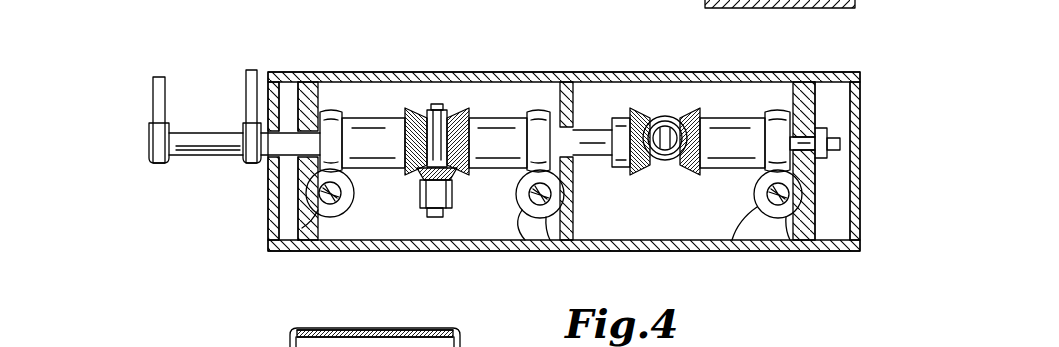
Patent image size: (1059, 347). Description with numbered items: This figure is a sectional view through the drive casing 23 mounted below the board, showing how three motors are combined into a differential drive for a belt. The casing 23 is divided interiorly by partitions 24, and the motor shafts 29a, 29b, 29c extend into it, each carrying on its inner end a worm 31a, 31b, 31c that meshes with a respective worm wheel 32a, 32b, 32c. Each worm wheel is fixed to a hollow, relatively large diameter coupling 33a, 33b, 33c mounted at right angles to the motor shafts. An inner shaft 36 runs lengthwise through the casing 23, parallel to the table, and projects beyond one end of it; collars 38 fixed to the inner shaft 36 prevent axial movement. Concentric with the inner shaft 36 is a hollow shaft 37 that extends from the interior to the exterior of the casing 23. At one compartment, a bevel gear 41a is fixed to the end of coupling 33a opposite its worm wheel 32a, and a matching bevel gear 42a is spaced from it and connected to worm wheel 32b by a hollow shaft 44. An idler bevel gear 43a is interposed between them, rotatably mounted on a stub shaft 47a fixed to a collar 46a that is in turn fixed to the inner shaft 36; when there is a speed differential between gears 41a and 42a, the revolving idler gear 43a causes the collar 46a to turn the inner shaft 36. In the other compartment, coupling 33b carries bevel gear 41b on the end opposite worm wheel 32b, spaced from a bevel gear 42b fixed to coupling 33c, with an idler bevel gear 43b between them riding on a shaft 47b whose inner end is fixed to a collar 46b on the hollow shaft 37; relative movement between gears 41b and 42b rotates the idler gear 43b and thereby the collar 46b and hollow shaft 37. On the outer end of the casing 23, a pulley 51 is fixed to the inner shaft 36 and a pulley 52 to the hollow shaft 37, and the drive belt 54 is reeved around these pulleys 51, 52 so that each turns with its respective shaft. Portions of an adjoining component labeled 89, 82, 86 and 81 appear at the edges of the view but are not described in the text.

The casing 23 is at (267, 253).
The partitions 24 is at (297, 108).
The inner shaft 36 is at (222, 133).
The hollow shaft 37 is at (272, 158).
The drive belt 54 is at (154, 97).
The pulley 51 is at (150, 140).
The pulley 52 is at (246, 128).
The worm wheel 32c is at (335, 112).
The coupling 33c is at (372, 118).
The bevel gear 42b is at (420, 115).
The collar 46b is at (441, 106).
The coupling 33b is at (498, 118).
The worm wheel 32b is at (546, 112).
The idler bevel gear 43b is at (418, 182).
The bevel gear 41b is at (455, 180).
The shaft 47b is at (440, 217).
The hollow shaft 44 is at (572, 122).
The stub shaft 47a is at (640, 112).
The bevel gear 42a is at (636, 176).
The idler bevel gear 43a is at (667, 161).
The bevel gear 41a is at (670, 136).
The collar 46a is at (650, 122).
The coupling 33a is at (738, 118).
The worm wheel 32a is at (780, 112).
The collars 38 is at (820, 128).
The shaft 29c is at (318, 198).
The worm 31c is at (302, 224).
The shaft 29b is at (530, 214).
The worm 31b is at (550, 230).
The shaft 29a is at (772, 215).
The worm 31a is at (753, 207).
The lid 89 is at (332, 328).
The cover 82 is at (392, 346).
The wall 86 is at (276, 346).
The base 81 is at (816, 339).